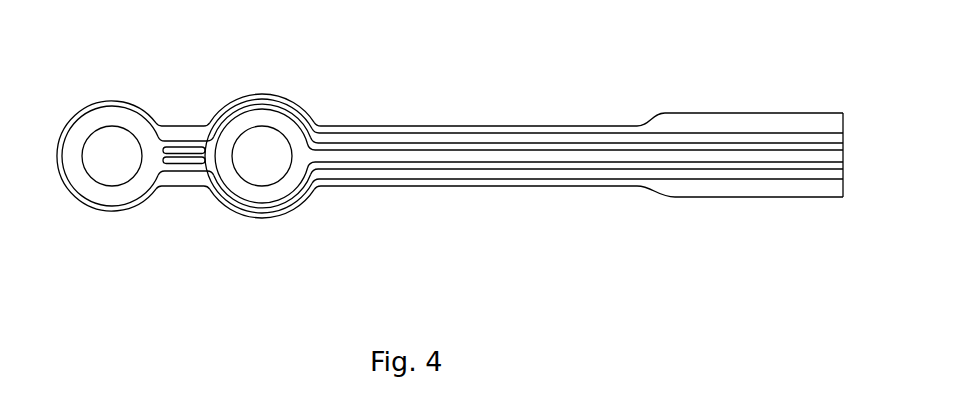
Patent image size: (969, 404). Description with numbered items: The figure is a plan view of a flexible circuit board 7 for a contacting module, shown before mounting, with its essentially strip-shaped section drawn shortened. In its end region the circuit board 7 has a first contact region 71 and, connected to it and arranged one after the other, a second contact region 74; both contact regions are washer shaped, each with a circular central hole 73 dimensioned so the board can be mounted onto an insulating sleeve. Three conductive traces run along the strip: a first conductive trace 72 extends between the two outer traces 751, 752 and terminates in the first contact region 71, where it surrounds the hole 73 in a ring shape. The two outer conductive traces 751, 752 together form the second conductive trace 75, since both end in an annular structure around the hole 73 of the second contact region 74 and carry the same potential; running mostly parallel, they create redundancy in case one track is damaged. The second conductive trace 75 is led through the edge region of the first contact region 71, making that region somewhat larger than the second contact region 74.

The flexible circuit board 7 is at (457, 170).
The first contact region 71 is at (243, 203).
The first conductive trace 72 is at (576, 129).
The through holes 73 is at (127, 170).
The second contact region 74 is at (125, 209).
The second conductive trace 75 is at (109, 119).
The outer conductive trace 751 is at (579, 95).
The outer conductive trace 752 is at (595, 222).